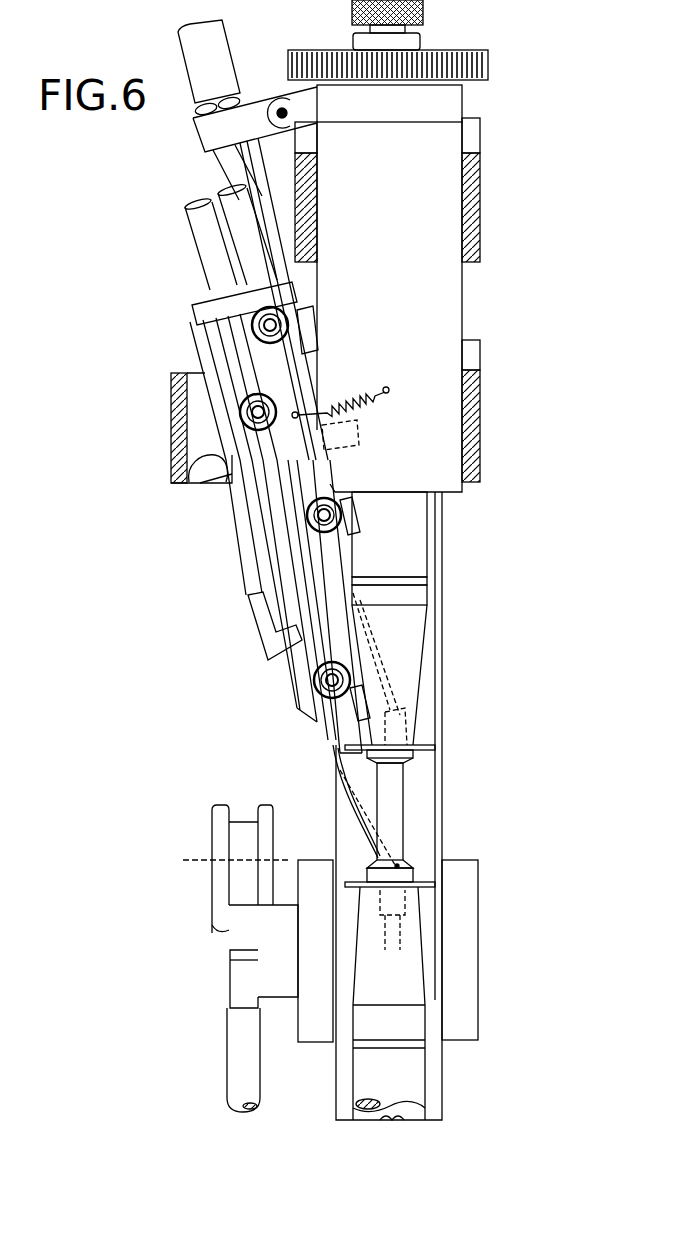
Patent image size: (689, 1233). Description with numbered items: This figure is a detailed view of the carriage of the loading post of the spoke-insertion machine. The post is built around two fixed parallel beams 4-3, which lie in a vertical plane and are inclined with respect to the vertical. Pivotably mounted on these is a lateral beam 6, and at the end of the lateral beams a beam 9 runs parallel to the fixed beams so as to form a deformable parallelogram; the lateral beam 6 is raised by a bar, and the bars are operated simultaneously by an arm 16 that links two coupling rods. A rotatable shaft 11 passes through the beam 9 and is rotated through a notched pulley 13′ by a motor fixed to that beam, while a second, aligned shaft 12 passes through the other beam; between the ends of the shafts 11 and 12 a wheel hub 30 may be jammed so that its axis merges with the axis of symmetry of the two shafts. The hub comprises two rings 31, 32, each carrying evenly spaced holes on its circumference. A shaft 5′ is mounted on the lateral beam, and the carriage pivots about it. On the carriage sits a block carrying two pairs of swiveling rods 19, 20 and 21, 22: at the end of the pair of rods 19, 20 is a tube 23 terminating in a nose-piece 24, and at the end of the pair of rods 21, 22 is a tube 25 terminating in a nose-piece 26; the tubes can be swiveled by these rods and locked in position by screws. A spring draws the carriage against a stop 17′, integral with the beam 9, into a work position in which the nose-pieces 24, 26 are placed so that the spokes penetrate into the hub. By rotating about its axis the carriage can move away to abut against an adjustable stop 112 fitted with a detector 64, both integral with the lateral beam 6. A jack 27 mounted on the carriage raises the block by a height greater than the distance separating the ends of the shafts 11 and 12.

The notched pulley 13′ is at (488, 65).
The beam 9 is at (430, 318).
The shaft 5′ is at (282, 113).
The jack 27 is at (187, 63).
The tube 25 is at (300, 462).
The swiveling rod 21 is at (258, 320).
The swiveling rod 19 is at (245, 405).
The tube 23 is at (285, 505).
The swiveling rod 22 is at (292, 548).
The swiveling rod 20 is at (322, 690).
The lateral beam 6 is at (172, 420).
The adjustable stop 112 is at (180, 463).
The detector 64 is at (208, 485).
The stop 17′ is at (322, 442).
The fixed parallel beams 4-3 is at (443, 600).
The shaft 11 is at (427, 643).
The nose-piece 26 is at (417, 713).
The ring 31 is at (436, 748).
The wheel hub 30 is at (410, 793).
The nose-piece 24 is at (405, 868).
The ring 32 is at (432, 878).
The shaft 12 is at (422, 968).
The arm 16 is at (242, 978).